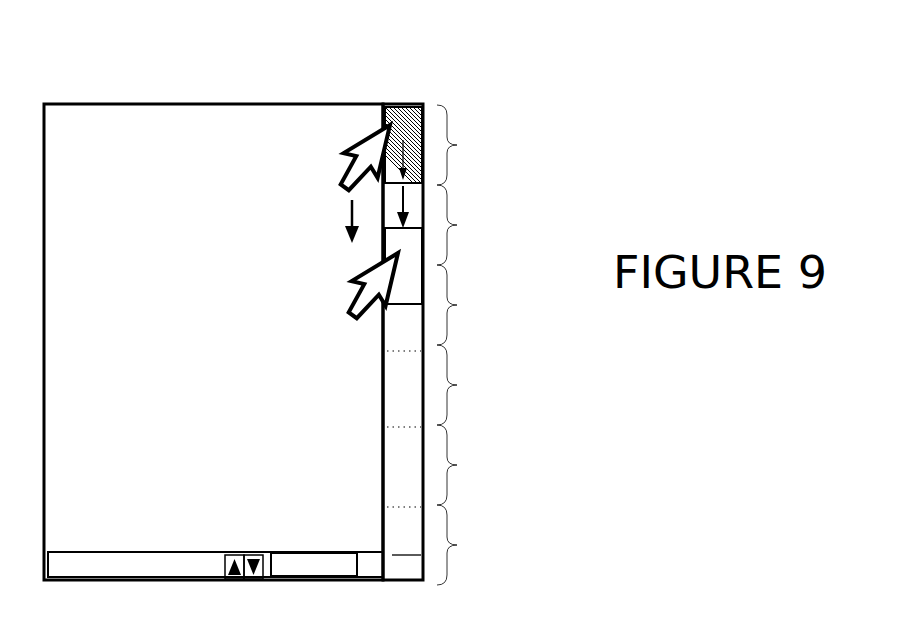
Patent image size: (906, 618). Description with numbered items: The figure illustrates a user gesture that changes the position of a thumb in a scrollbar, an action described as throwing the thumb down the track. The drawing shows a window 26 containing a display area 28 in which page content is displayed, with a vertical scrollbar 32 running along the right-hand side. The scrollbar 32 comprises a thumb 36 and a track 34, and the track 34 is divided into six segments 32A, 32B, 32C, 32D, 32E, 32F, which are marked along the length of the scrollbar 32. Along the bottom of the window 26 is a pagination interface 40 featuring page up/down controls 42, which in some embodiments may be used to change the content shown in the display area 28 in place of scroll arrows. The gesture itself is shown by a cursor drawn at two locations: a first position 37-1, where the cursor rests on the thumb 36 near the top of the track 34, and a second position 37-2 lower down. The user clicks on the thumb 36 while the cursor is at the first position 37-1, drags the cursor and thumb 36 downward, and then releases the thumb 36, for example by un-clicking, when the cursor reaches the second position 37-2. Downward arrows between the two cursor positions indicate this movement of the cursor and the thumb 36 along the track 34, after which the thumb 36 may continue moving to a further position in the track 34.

The window 26 is at (75, 108).
The display area 28 is at (143, 126).
The scrollbar 32 is at (402, 104).
The segment 32A is at (455, 145).
The segment 32B is at (454, 225).
The segment 32C is at (454, 305).
The segment 32D is at (454, 385).
The segment 32E is at (453, 465).
The segment 32F is at (452, 545).
The track 34 is at (403, 555).
The thumb 36 is at (405, 177).
The first position 37-1 is at (347, 160).
The second position 37-2 is at (357, 278).
The pagination interface 40 is at (320, 550).
The page up/down controls 42 is at (240, 553).